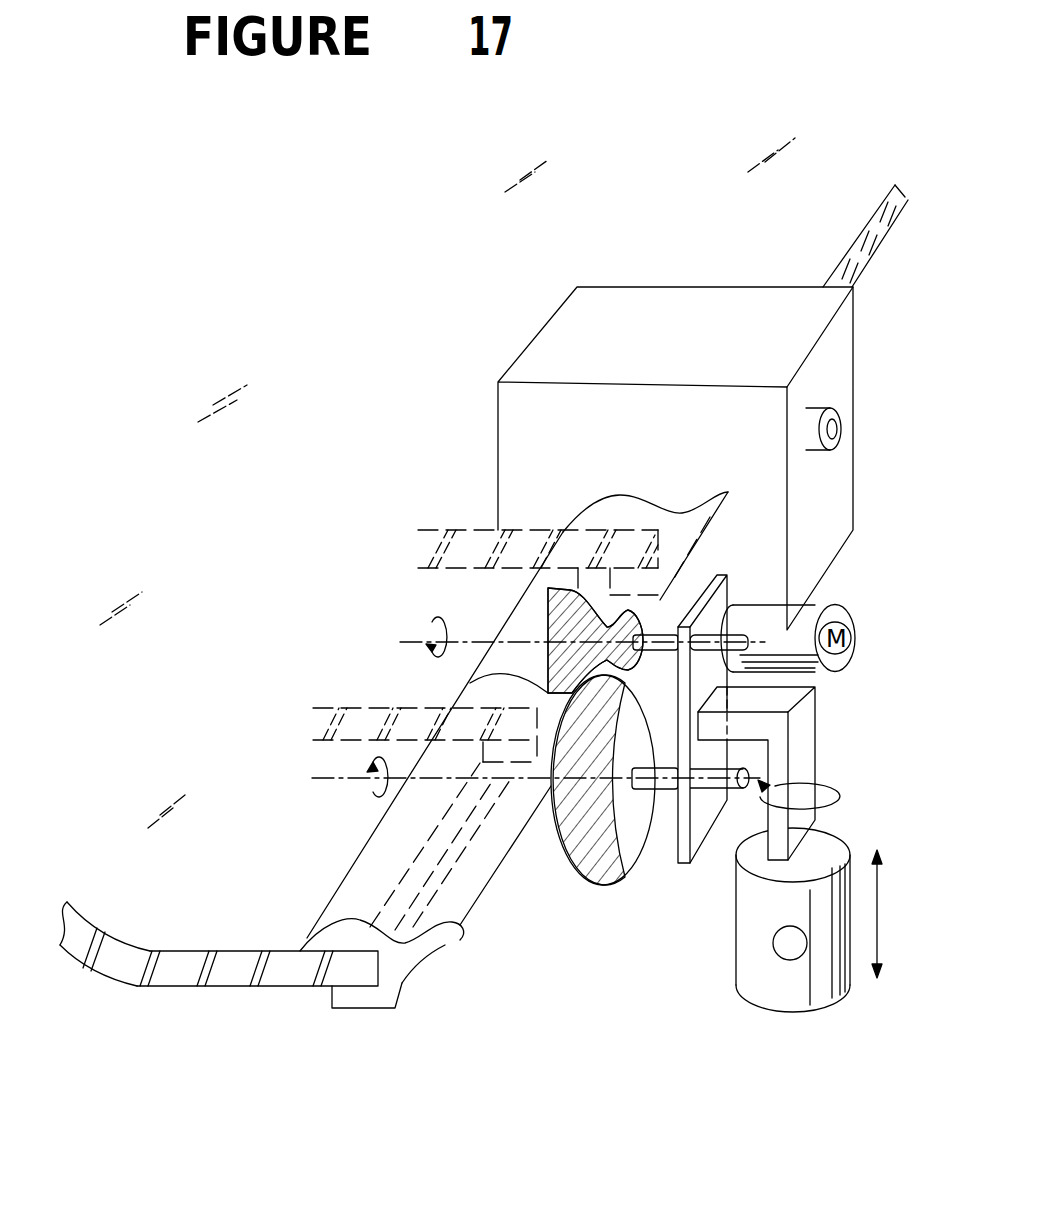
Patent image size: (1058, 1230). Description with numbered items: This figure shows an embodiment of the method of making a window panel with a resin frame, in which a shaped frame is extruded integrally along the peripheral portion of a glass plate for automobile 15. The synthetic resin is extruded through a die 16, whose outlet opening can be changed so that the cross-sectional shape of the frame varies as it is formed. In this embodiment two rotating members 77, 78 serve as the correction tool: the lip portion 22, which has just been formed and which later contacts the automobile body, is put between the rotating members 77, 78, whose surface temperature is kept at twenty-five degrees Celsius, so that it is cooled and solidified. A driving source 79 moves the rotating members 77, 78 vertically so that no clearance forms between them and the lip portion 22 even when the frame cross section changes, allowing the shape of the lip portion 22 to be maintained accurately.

The glass plate for automobile 15 is at (377, 353).
The die 16 is at (693, 318).
The lip portion 22 is at (473, 942).
The rotating member 77 is at (547, 623).
The rotating member 78 is at (590, 832).
The driving source 79 is at (753, 982).